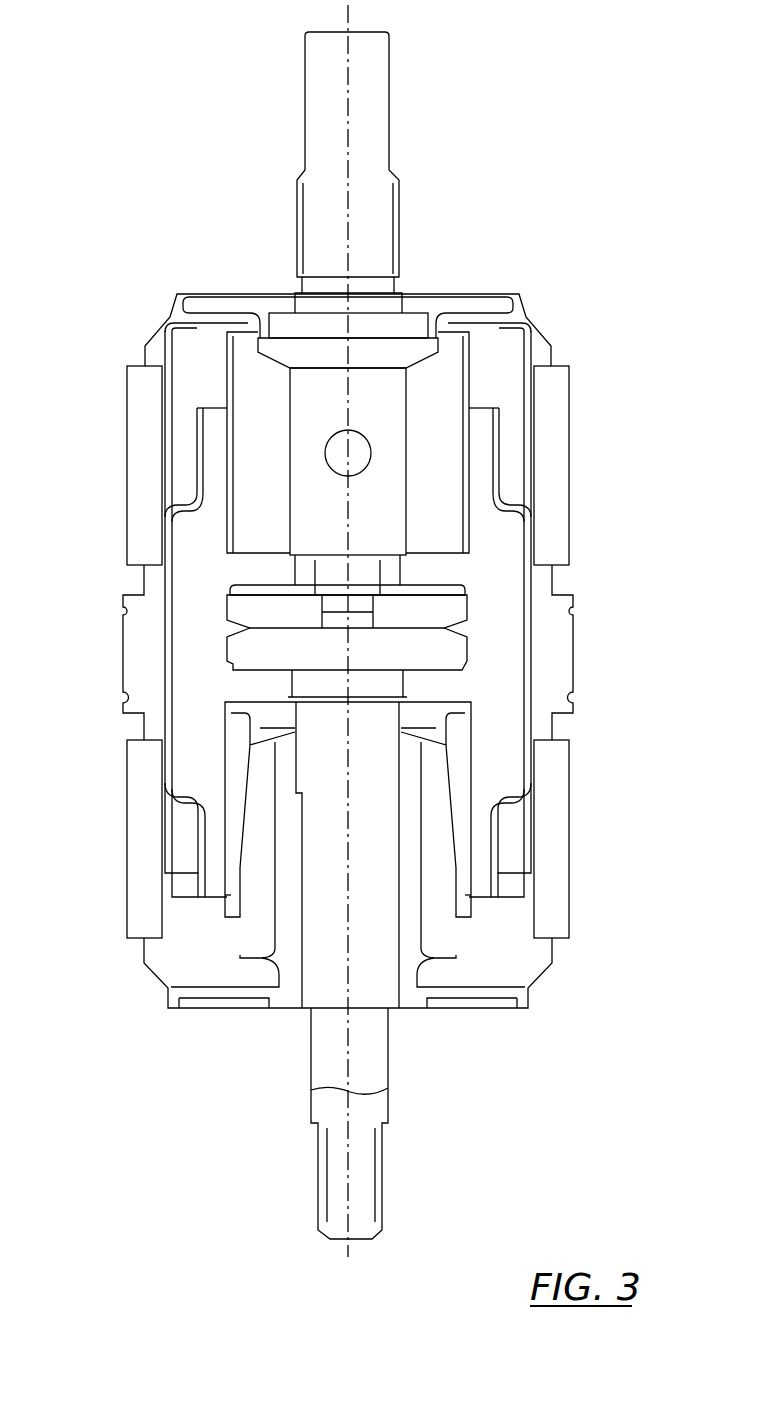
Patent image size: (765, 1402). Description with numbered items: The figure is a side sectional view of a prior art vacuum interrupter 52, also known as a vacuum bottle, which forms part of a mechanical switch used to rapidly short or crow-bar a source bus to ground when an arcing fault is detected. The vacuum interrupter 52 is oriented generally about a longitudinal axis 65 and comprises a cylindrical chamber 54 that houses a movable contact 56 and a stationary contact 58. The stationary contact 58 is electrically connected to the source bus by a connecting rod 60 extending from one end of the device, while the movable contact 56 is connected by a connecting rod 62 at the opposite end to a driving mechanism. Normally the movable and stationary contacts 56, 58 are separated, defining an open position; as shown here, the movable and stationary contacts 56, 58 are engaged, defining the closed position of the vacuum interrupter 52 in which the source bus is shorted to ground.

The vacuum interrupter 52 is at (624, 624).
The cylindrical chamber 54 is at (555, 449).
The movable contact 56 is at (253, 657).
The stationary contact 58 is at (253, 612).
The connecting rod 60 is at (312, 222).
The connecting rod 62 is at (310, 1080).
The longitudinal axis 65 is at (350, 1092).